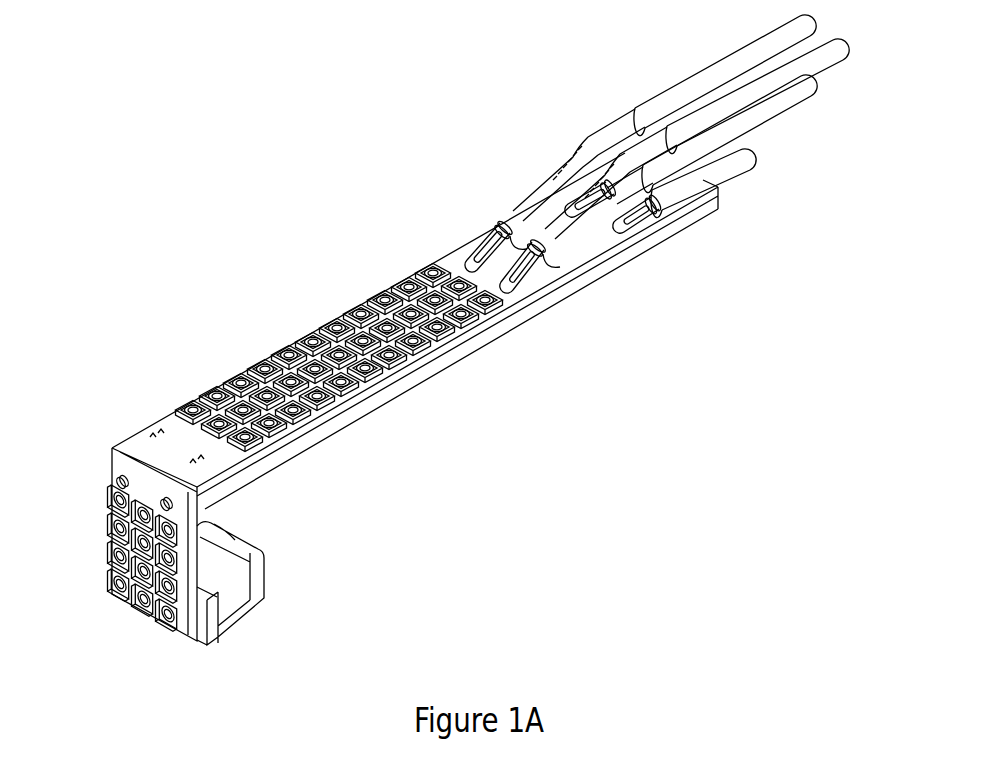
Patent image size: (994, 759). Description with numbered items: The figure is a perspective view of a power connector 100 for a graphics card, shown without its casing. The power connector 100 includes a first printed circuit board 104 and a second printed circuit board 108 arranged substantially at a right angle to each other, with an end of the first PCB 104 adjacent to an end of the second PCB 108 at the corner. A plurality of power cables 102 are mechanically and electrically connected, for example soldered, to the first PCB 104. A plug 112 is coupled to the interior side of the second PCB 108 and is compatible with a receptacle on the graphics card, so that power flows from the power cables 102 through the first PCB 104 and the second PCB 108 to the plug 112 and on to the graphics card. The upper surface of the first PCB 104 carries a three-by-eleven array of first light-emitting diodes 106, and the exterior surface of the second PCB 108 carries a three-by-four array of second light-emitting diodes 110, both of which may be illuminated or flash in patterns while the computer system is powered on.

The power connector 100 is at (233, 104).
The power cables 102 is at (708, 98).
The first printed circuit board 104 is at (458, 260).
The first light-emitting diodes 106 is at (288, 383).
The second printed circuit board 108 is at (117, 467).
The second light-emitting diodes 110 is at (140, 573).
The plug 112 is at (257, 573).